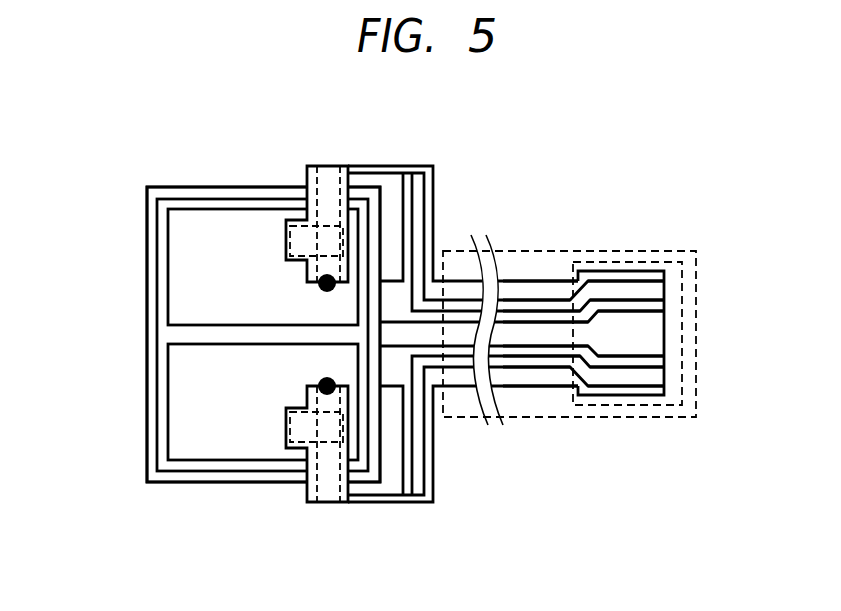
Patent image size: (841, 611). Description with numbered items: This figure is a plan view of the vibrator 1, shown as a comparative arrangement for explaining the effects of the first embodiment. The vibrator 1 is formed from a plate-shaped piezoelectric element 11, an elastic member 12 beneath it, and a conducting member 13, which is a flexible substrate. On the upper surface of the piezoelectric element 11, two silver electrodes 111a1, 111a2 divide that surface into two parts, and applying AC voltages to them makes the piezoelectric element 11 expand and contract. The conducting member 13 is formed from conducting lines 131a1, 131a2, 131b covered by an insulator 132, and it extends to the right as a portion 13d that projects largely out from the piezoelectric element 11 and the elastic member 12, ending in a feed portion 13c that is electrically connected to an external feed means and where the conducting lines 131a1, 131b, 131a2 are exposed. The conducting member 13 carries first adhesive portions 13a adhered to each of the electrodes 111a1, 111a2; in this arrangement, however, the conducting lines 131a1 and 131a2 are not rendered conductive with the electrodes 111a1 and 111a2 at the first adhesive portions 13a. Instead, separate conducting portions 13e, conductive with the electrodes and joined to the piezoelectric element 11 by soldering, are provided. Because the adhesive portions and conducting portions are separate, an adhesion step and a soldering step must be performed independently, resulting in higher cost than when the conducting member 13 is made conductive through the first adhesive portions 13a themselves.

The vibrator 1 is at (125, 160).
The piezoelectric element 11 is at (147, 243).
The elastic member 12 is at (147, 420).
The electrode 111a1 is at (207, 208).
The electrode 111a2 is at (203, 462).
The conducting member 13 is at (515, 278).
The first adhesive portion 13a is at (346, 240).
The conducting portion 13e is at (324, 384).
The insulator 132 is at (538, 287).
The feed portion 13c is at (663, 251).
The portion 13d is at (650, 417).
The conducting line 131a1 is at (662, 291).
The conducting line 131b is at (662, 336).
The conducting line 131a2 is at (662, 377).